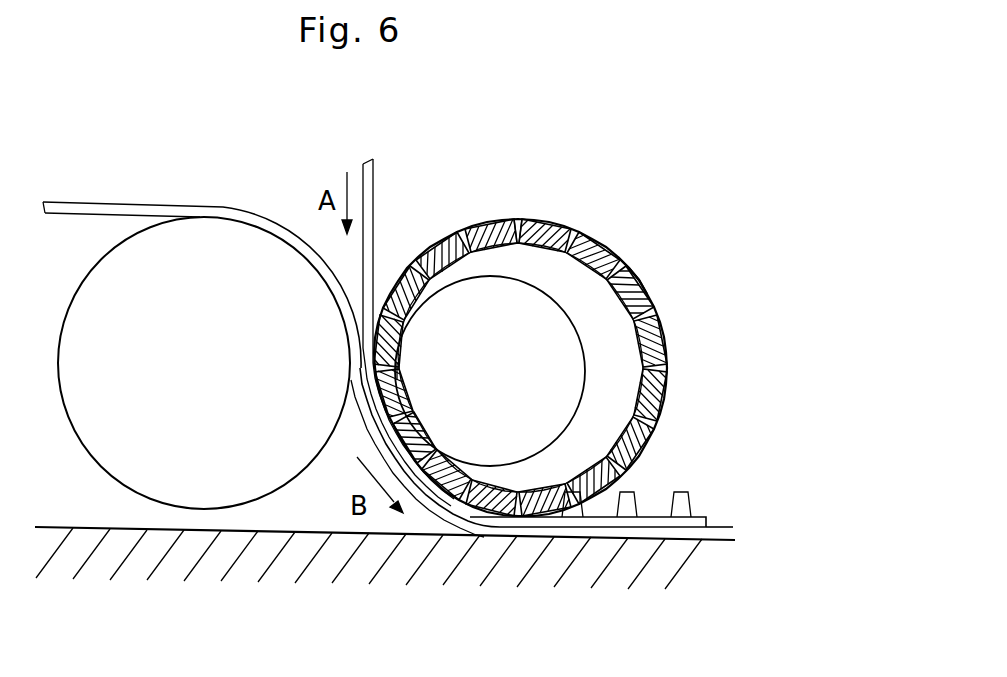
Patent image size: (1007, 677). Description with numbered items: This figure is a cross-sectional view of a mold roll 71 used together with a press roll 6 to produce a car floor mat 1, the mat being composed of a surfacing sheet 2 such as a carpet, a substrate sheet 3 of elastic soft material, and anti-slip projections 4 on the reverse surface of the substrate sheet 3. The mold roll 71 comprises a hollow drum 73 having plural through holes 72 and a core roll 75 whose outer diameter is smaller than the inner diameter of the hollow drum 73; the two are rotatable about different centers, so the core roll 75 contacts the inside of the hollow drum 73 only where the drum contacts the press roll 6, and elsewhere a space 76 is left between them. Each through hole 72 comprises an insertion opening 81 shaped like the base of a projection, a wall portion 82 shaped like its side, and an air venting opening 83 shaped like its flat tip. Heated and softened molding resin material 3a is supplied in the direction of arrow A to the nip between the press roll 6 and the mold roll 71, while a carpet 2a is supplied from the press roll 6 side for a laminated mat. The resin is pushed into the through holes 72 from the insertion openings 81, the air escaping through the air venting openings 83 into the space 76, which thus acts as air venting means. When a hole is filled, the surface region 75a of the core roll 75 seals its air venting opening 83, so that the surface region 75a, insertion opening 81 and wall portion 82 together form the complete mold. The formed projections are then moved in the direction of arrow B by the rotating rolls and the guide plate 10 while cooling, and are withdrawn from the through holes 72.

The car floor mat 1 is at (711, 531).
The surfacing sheet 2 is at (662, 539).
The surfacing sheet (carpet) 2a is at (165, 204).
The substrate sheet 3 is at (652, 516).
The molding resin material 3a is at (374, 174).
The projections 4 is at (683, 505).
The press roll 6 is at (220, 376).
The guide plate 10 is at (316, 563).
The mold roll 71 is at (614, 229).
The through holes 72 is at (381, 312).
The hollow drum 73 is at (647, 292).
The core roll 75 is at (560, 388).
The surface region of core roll 75a is at (398, 371).
The space 76 is at (625, 348).
The insertion opening 81 is at (527, 243).
The wall portion 82 is at (512, 221).
The air venting opening 83 is at (518, 240).